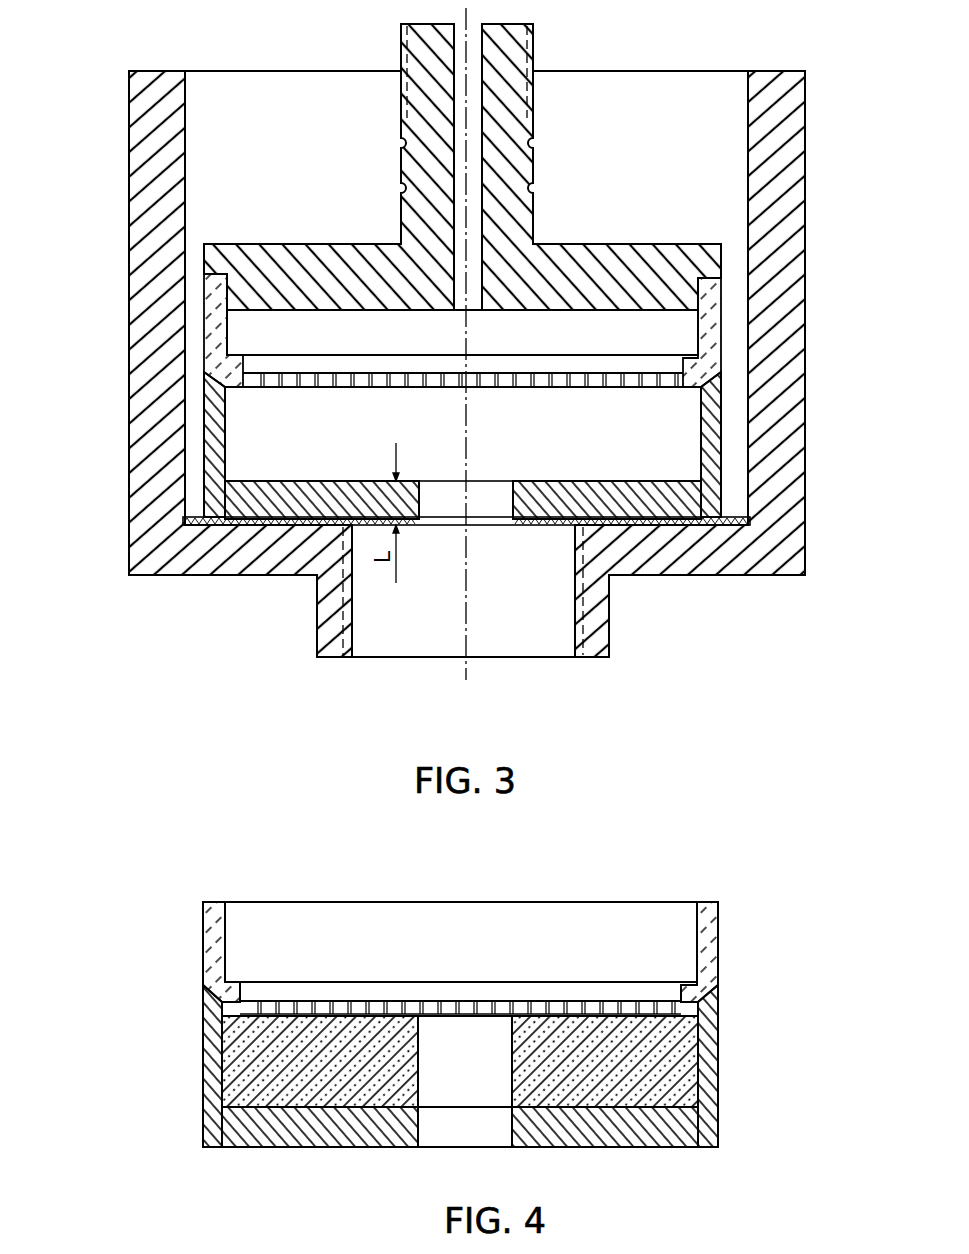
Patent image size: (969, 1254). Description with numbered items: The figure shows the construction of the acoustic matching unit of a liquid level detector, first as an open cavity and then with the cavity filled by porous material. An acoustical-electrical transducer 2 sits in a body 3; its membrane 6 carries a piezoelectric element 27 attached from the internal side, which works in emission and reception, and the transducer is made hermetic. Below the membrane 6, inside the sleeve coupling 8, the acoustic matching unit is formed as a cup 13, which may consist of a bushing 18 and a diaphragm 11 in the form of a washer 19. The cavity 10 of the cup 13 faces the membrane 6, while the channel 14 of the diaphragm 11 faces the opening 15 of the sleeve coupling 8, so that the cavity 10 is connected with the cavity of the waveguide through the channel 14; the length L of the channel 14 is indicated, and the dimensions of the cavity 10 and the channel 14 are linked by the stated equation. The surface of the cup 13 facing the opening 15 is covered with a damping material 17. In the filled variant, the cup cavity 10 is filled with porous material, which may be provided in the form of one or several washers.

In FIG. 3, the acoustical-electrical transducer 2 is at (395, 342).
In FIG. 4, the acoustical-electrical transducer 2 is at (455, 948).
In FIG. 3, the body 3 is at (222, 328).
In FIG. 3, the membrane 6 is at (553, 387).
In FIG. 3, the sleeve coupling 8 is at (777, 545).
In FIG. 3, the cavity 10 is at (360, 439).
In FIG. 4, the cavity 10 is at (288, 1053).
In FIG. 3, the diaphragm 11 is at (563, 500).
In FIG. 3, the cup 13 is at (686, 423).
In FIG. 3, the channel 14 is at (442, 508).
In FIG. 3, the opening 15 is at (495, 578).
In FIG. 3, the damping material 17 is at (645, 521).
In FIG. 3, the bushing 18 is at (735, 462).
In FIG. 3, the washer 19 is at (670, 503).
In FIG. 4, the washer 19 is at (612, 1125).
In FIG. 3, the piezoelectric element 27 is at (600, 378).